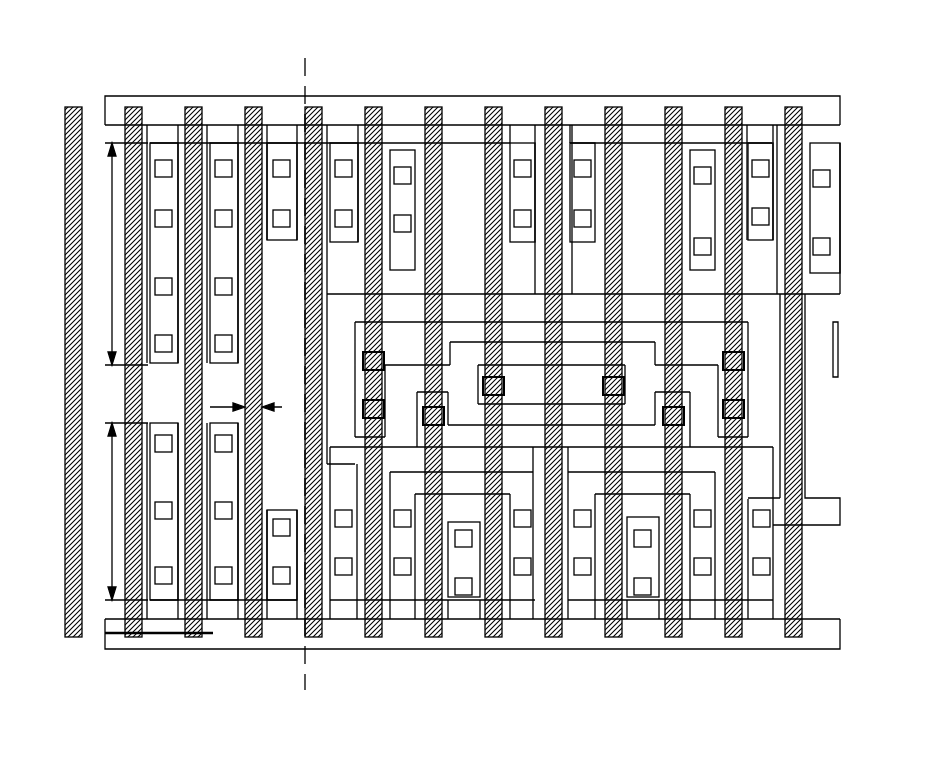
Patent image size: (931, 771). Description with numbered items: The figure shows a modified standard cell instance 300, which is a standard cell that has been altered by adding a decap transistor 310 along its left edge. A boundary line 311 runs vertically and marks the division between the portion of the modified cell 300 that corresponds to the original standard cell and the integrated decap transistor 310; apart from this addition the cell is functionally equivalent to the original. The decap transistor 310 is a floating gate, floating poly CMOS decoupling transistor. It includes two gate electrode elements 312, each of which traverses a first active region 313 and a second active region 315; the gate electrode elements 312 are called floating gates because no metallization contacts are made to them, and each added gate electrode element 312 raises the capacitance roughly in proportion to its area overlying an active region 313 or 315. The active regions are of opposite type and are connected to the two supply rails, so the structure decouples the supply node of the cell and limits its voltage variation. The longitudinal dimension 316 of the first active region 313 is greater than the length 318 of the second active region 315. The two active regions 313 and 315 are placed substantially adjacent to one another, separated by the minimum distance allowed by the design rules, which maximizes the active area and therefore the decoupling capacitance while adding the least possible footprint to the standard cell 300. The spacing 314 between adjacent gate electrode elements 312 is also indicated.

The modified standard cell instance 300 is at (605, 719).
The decap transistor 310 is at (170, 80).
The boundary line 311 is at (320, 76).
The gate electrode elements 312 is at (250, 140).
The first active region 313 is at (153, 366).
The gate pitch 314 is at (214, 407).
The second active region 315 is at (172, 421).
The longitudinal dimension 316 is at (112, 234).
The length 318 is at (112, 510).